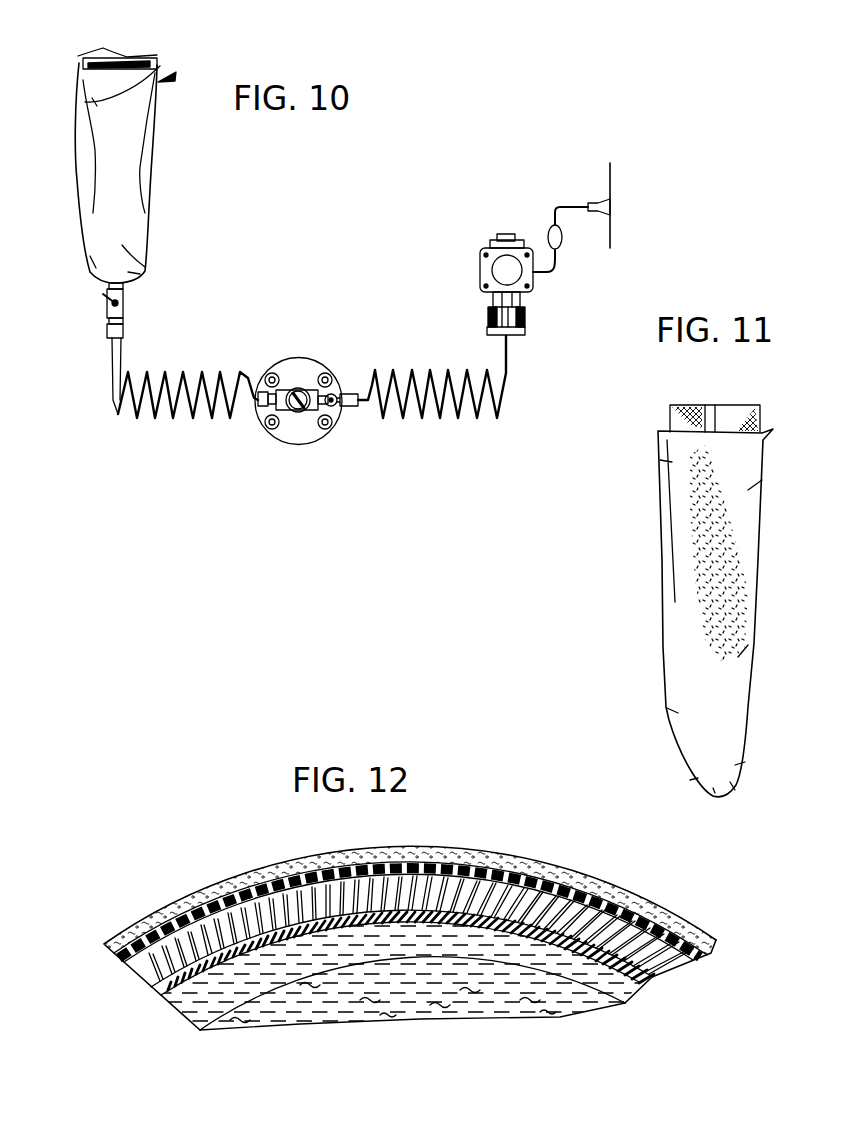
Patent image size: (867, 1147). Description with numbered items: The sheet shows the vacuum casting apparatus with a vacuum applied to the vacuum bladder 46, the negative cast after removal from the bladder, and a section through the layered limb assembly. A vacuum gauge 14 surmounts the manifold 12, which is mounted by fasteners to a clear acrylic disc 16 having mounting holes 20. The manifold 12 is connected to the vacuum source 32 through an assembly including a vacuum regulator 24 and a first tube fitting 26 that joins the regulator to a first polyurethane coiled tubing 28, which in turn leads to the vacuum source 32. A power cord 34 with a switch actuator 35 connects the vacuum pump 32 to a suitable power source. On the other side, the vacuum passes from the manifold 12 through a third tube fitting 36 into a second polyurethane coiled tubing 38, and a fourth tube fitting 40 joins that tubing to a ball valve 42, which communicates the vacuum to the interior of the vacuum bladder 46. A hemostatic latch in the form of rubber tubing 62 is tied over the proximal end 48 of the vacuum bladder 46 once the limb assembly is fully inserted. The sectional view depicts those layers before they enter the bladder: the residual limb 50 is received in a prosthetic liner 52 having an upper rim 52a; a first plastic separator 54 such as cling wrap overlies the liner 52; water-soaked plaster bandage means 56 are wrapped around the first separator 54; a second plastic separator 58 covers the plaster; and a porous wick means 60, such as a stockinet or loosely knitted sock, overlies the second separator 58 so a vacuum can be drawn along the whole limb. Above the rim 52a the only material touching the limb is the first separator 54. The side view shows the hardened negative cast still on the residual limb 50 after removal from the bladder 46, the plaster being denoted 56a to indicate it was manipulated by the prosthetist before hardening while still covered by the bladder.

In FIG. 10, the manifold 12 is at (306, 390).
In FIG. 10, the vacuum gauge 14 is at (299, 412).
In FIG. 10, the clear acrylic disc 16 is at (293, 358).
In FIG. 10, the mounting holes 20 is at (268, 424).
In FIG. 10, the vacuum regulator 24 is at (333, 396).
In FIG. 10, the first tube fitting 26 is at (350, 410).
In FIG. 10, the first polyurethane coiled tubing 28 is at (450, 370).
In FIG. 10, the vacuum source 32 is at (480, 268).
In FIG. 10, the power cord 34 is at (574, 203).
In FIG. 10, the switch actuator 35 is at (562, 248).
In FIG. 10, the third tube fitting 36 is at (262, 392).
In FIG. 10, the second polyurethane coiled tubing 38 is at (157, 423).
In FIG. 10, the fourth tube fitting 40 is at (108, 332).
In FIG. 10, the ball valve 42 is at (125, 298).
In FIG. 10, the vacuum bladder 46 is at (153, 177).
In FIG. 10, the proximal end 48 is at (177, 80).
In FIG. 10, the residual limb 50 is at (110, 50).
In FIG. 12, the residual limb 50 is at (465, 987).
In FIG. 11, the prosthetic liner 52 is at (668, 413).
In FIG. 12, the prosthetic liner 52 is at (635, 1003).
In FIG. 10, the upper rim 52a is at (150, 54).
In FIG. 11, the upper rim 52a is at (727, 406).
In FIG. 12, the first plastic separator 54 is at (647, 972).
In FIG. 12, the plaster bandage means 56 is at (152, 977).
In FIG. 11, the manipulated plaster means 56a is at (662, 555).
In FIG. 12, the second plastic separator 58 is at (705, 952).
In FIG. 12, the porous wick means 60 is at (653, 902).
In FIG. 10, the rubber tubing 62 is at (90, 101).